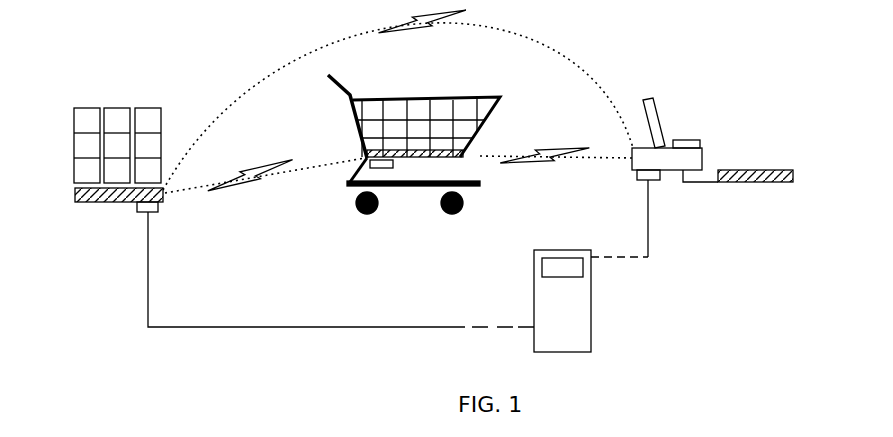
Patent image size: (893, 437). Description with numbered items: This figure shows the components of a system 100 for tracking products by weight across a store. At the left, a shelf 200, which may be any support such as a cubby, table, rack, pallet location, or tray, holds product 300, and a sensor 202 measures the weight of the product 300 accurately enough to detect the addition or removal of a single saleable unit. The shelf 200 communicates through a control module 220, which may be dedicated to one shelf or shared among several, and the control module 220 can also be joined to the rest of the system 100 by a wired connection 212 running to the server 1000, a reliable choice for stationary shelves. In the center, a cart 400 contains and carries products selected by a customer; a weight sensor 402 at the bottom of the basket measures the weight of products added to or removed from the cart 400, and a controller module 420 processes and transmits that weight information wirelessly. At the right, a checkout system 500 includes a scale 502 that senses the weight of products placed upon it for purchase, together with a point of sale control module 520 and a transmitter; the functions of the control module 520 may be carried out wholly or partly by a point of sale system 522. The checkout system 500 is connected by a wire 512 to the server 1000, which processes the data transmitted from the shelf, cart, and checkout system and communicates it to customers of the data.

The system 100 is at (636, 48).
The shelf 200 is at (151, 162).
The sensor 202 is at (127, 203).
The wired connection 212 is at (300, 323).
The control module 220 is at (162, 213).
The product 300 is at (132, 98).
The cart 400 is at (441, 147).
The weight sensor 402 is at (440, 158).
The controller module 420 is at (397, 172).
The checkout system 500 is at (717, 163).
The scale 502 is at (765, 170).
The wire 512 is at (653, 242).
The point of sale control module 520 is at (662, 185).
The point of sale system 522 is at (675, 123).
The server 1000 is at (582, 327).